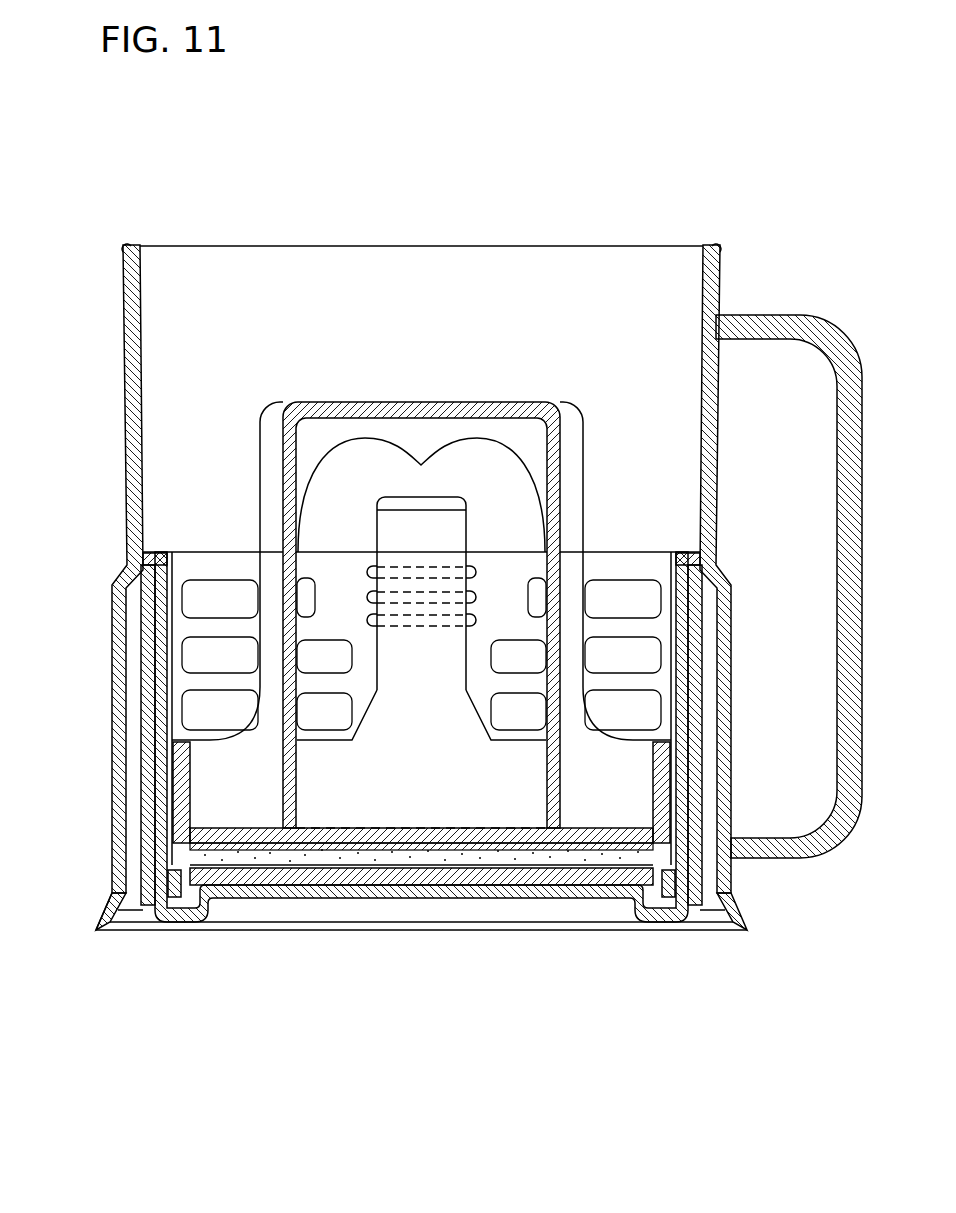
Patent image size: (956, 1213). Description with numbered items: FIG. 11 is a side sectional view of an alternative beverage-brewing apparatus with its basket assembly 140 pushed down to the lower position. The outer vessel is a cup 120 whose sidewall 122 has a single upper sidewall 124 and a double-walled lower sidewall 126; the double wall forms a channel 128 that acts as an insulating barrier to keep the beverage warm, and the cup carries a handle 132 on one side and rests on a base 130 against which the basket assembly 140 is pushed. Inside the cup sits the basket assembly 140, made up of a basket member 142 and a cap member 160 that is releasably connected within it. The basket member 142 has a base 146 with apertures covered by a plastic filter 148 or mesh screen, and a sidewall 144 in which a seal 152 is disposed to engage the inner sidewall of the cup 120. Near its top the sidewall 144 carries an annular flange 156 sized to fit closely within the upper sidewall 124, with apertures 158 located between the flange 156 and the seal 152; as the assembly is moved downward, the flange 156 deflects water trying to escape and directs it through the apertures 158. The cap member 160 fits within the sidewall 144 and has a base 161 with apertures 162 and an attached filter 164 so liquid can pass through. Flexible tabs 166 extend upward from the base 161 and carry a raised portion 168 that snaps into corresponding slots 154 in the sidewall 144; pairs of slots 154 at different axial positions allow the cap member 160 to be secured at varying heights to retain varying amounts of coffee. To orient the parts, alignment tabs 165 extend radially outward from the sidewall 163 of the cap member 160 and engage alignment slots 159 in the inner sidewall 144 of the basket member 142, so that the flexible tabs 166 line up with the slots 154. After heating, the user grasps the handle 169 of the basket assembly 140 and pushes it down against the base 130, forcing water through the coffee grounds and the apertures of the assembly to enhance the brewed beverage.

The cup 120 is at (117, 397).
The sidewall 122 is at (718, 413).
The upper sidewall 124 is at (125, 313).
The double-walled lower sidewall 126 is at (112, 605).
The channel 128 is at (135, 808).
The base 130 is at (500, 898).
The handle 132 is at (836, 478).
The basket assembly 140 is at (391, 388).
The basket member 142 is at (293, 877).
The sidewall 144 is at (163, 625).
The base 146 is at (590, 878).
The plastic filter 148 is at (387, 865).
The seal 152 is at (173, 885).
The slots 154 is at (367, 620).
The annular flange 156 is at (137, 555).
The apertures 158 is at (650, 655).
The alignment slots 159 is at (168, 788).
The cap member 160 is at (505, 403).
The base 161 is at (257, 830).
The apertures 162 is at (471, 832).
The sidewall 163 is at (187, 757).
The filter 164 is at (390, 842).
The alignment tabs 165 is at (675, 765).
The flexible tabs 166 is at (398, 500).
The raised portion 168 is at (452, 618).
The handle 169 is at (312, 403).